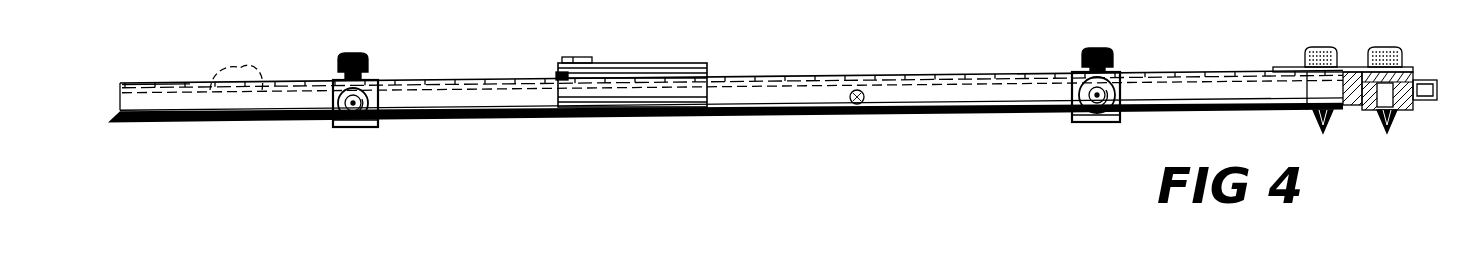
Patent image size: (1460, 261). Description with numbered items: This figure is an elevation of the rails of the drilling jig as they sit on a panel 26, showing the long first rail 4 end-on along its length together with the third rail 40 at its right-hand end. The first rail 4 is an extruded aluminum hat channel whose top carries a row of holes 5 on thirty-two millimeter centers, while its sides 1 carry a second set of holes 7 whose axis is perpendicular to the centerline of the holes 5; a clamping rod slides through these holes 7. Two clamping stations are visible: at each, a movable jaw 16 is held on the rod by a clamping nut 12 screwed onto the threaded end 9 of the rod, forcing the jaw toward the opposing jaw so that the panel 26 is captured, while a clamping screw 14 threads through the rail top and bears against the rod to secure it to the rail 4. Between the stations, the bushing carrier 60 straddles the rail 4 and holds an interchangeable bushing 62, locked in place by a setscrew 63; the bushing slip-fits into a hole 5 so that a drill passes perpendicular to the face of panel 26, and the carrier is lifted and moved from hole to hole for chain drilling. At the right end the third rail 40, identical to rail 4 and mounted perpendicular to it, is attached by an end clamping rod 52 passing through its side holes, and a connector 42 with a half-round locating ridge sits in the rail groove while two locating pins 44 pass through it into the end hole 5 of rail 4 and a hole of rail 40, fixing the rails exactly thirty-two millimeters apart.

The sides 1 is at (1017, 97).
The first rail 4 is at (155, 83).
The holes 5 is at (236, 68).
The second set of holes 7 is at (858, 105).
The threaded end 9 is at (350, 108).
The clamping nut 12 is at (342, 108).
The clamping screws 14 is at (360, 52).
The movable jaw 16 is at (365, 127).
The panel 26 is at (763, 115).
The third rail 40 is at (1432, 80).
The connector 42 is at (1282, 67).
The locating pins 44 is at (1385, 134).
The end clamping rod 52 is at (1440, 108).
The bushing carrier 60 is at (665, 63).
The bushing 62 is at (590, 57).
The setscrew 63 is at (556, 74).